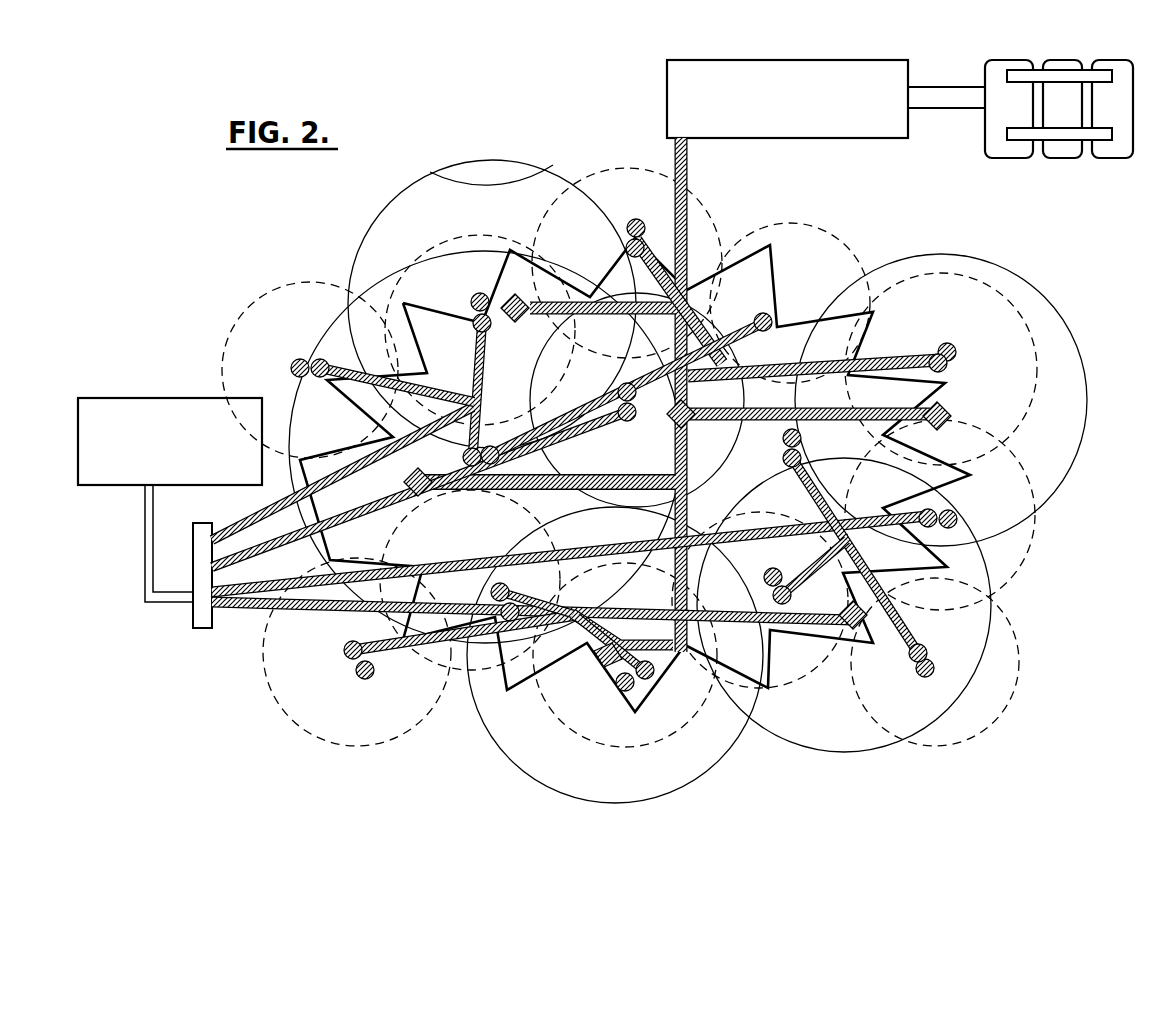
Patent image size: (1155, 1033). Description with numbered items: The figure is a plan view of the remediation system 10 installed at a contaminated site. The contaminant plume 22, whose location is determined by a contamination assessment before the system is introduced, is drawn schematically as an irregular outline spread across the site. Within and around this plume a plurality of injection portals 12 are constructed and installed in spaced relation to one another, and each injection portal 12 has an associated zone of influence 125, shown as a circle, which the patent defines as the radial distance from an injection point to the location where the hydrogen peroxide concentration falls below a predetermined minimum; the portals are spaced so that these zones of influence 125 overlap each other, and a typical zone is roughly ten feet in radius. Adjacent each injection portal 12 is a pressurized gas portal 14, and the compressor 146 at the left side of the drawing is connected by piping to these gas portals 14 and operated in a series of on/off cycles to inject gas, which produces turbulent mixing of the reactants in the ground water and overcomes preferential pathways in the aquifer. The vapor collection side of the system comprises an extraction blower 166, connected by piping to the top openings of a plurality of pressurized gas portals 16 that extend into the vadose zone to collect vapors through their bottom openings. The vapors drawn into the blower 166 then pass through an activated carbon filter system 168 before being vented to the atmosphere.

The remediation system 10 is at (165, 277).
The injection portal 12 is at (960, 522).
The pressurized gas portal 14 is at (953, 514).
The pressurized gas portal 16 is at (850, 640).
The contaminant plume 22 is at (883, 312).
The zone of influence 125 is at (1053, 583).
The compressor 146 is at (185, 398).
The extraction blower 166 is at (780, 60).
The activated carbon filter system 168 is at (1063, 60).